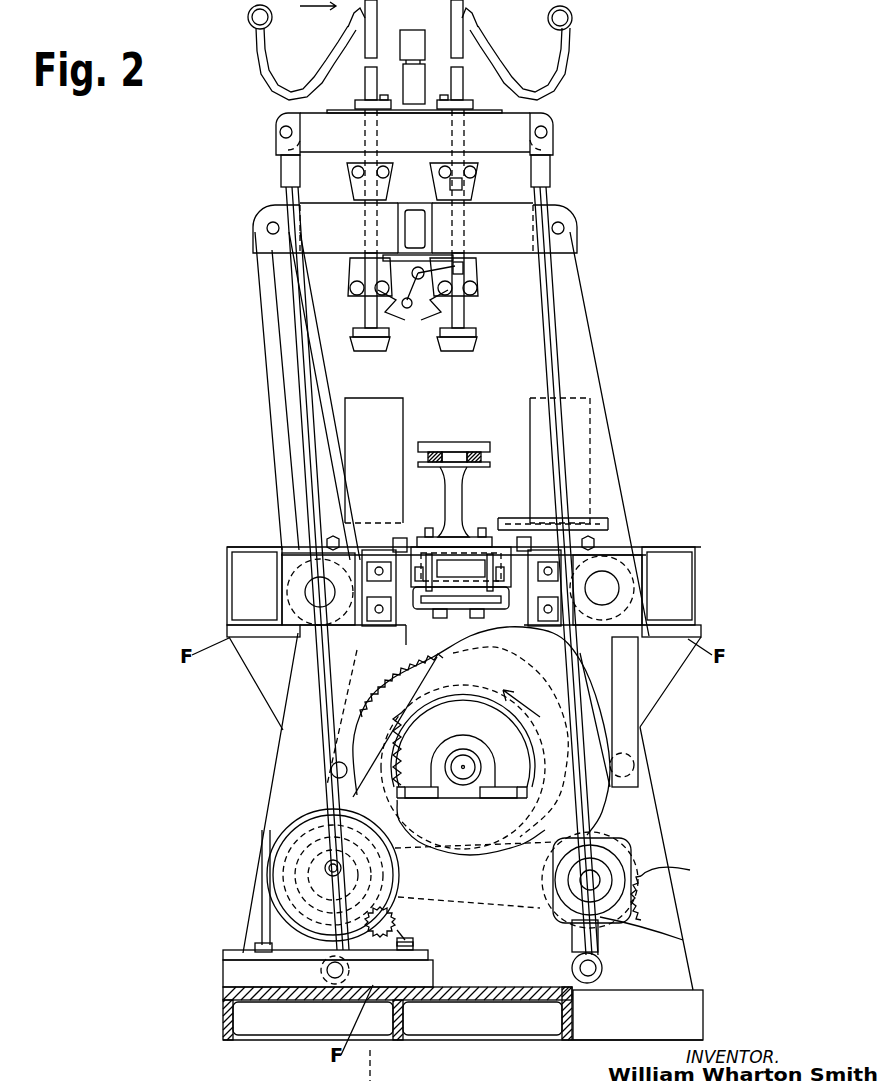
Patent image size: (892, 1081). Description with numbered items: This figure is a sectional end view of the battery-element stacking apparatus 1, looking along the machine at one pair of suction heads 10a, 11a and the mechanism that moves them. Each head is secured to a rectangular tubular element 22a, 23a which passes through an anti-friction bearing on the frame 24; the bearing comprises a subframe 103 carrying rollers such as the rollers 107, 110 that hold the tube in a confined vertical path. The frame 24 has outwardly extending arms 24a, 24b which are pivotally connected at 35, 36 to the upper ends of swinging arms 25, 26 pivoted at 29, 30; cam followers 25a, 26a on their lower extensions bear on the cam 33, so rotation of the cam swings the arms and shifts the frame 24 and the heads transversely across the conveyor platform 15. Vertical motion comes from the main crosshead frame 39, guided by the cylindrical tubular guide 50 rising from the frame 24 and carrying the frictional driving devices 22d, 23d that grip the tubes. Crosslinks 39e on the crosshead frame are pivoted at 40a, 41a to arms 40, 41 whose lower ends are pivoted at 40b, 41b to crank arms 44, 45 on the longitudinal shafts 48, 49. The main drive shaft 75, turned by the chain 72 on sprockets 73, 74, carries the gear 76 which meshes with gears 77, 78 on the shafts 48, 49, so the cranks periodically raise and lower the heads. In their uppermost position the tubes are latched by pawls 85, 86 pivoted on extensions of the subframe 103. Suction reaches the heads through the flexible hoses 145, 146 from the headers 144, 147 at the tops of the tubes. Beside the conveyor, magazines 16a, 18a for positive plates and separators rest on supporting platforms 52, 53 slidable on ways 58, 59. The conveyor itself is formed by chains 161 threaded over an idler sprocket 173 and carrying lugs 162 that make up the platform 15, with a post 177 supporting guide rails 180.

The machine 1 is at (318, 10).
The header 144 is at (249, 24).
The flexible hose 145 is at (259, 80).
The flexible hose 146 is at (556, 76).
The second header 147 is at (573, 27).
The tubular element 22a is at (364, 50).
The tubular element 23a is at (469, 40).
The cylindrical tubular guide 50 is at (412, 38).
The frictional driving device 22d is at (362, 101).
The frictional driving device 23d is at (486, 90).
The main crosshead frame 39 is at (419, 141).
The pivot 41a is at (280, 132).
The pivot 40a is at (547, 132).
The arm 41 is at (282, 173).
The arm 40 is at (550, 173).
The crosslink 39e is at (522, 150).
The arm 24b is at (306, 210).
The arm 24a is at (520, 208).
The frame 24 is at (398, 235).
The pivot 36 is at (268, 229).
The pivot 35 is at (563, 228).
The anti-friction roller 110 is at (456, 259).
The subframe 103 is at (463, 267).
The anti-friction roller 107 is at (477, 288).
The pawl 85 is at (388, 310).
The pawl 86 is at (437, 314).
The suction head 10a is at (368, 352).
The suction head 11a is at (462, 352).
The arm 26 is at (264, 357).
The arm 25 is at (589, 334).
The magazine 16a is at (400, 398).
The magazine 18a is at (535, 398).
The conveyor chain 161 is at (416, 448).
The lug 162 is at (452, 450).
The supporting platform 15 is at (462, 433).
The guide rail 180 is at (474, 452).
The post 177 is at (462, 494).
The supporting platform 52 is at (520, 526).
The supporting platform 53 is at (322, 527).
The way 58 is at (310, 537).
The way 59 is at (517, 538).
The pivot 30 is at (318, 592).
The pivot 29 is at (604, 589).
The idler sprocket 173 is at (470, 598).
The gear 76 is at (412, 664).
The chain 72 is at (432, 702).
The sprocket 74 is at (407, 748).
The main drive shaft 75 is at (472, 766).
The cam follower 25a is at (635, 762).
The cam follower 26a is at (336, 786).
The sprocket 73 is at (290, 840).
The shaft 49 is at (265, 878).
The gear 78 is at (393, 920).
The cam 33 is at (522, 905).
The shaft 48 is at (606, 880).
The pivot 40b is at (580, 968).
The gear 77 is at (646, 905).
The pivot 41b is at (345, 971).
The crank arm 45 is at (313, 953).
The crank arm 44 is at (606, 946).